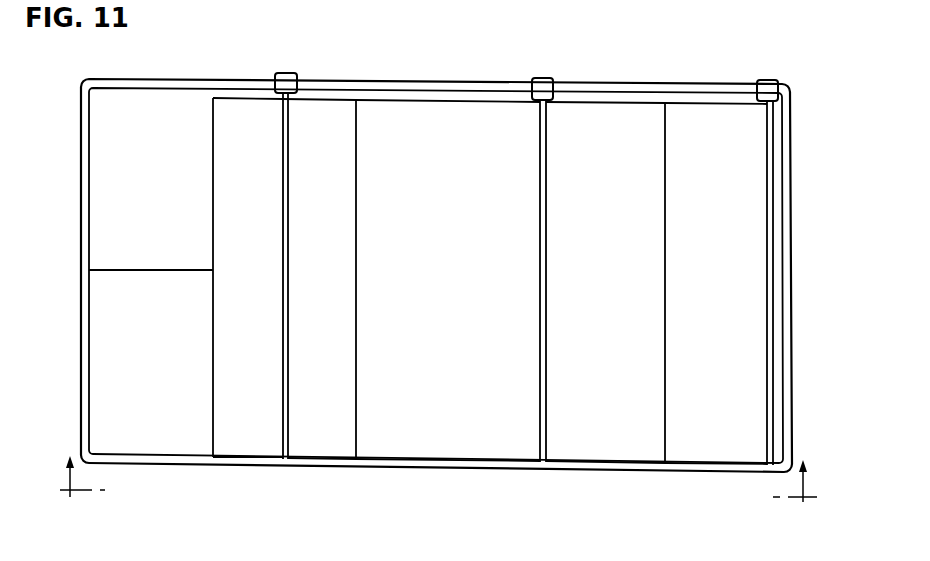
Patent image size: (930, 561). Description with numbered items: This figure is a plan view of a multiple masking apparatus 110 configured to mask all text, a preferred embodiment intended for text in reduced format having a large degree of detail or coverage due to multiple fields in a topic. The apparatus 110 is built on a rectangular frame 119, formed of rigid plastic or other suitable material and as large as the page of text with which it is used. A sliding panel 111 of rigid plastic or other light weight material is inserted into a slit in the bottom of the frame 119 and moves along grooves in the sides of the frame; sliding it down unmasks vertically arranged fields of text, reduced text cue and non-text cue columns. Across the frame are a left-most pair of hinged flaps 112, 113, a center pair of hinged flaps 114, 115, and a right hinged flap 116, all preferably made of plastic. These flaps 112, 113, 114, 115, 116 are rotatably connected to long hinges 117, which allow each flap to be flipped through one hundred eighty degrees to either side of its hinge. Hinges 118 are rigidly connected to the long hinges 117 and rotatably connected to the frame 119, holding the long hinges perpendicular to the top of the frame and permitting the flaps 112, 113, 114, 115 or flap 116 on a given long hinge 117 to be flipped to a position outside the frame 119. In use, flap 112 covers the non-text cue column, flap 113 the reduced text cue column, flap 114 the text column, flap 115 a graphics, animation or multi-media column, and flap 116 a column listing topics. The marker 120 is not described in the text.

The masking apparatus 110 is at (153, 74).
The sliding panel 111 is at (117, 368).
The hinged flap 112 is at (250, 448).
The hinged flap 113 is at (333, 448).
The hinged flap 114 is at (478, 452).
The hinged flap 115 is at (618, 450).
The right hinged flap 116 is at (745, 455).
The long hinge 117 is at (287, 120).
The hinge 118 is at (287, 73).
The rectangular frame 119 is at (93, 240).
The section line 120 is at (442, 490).